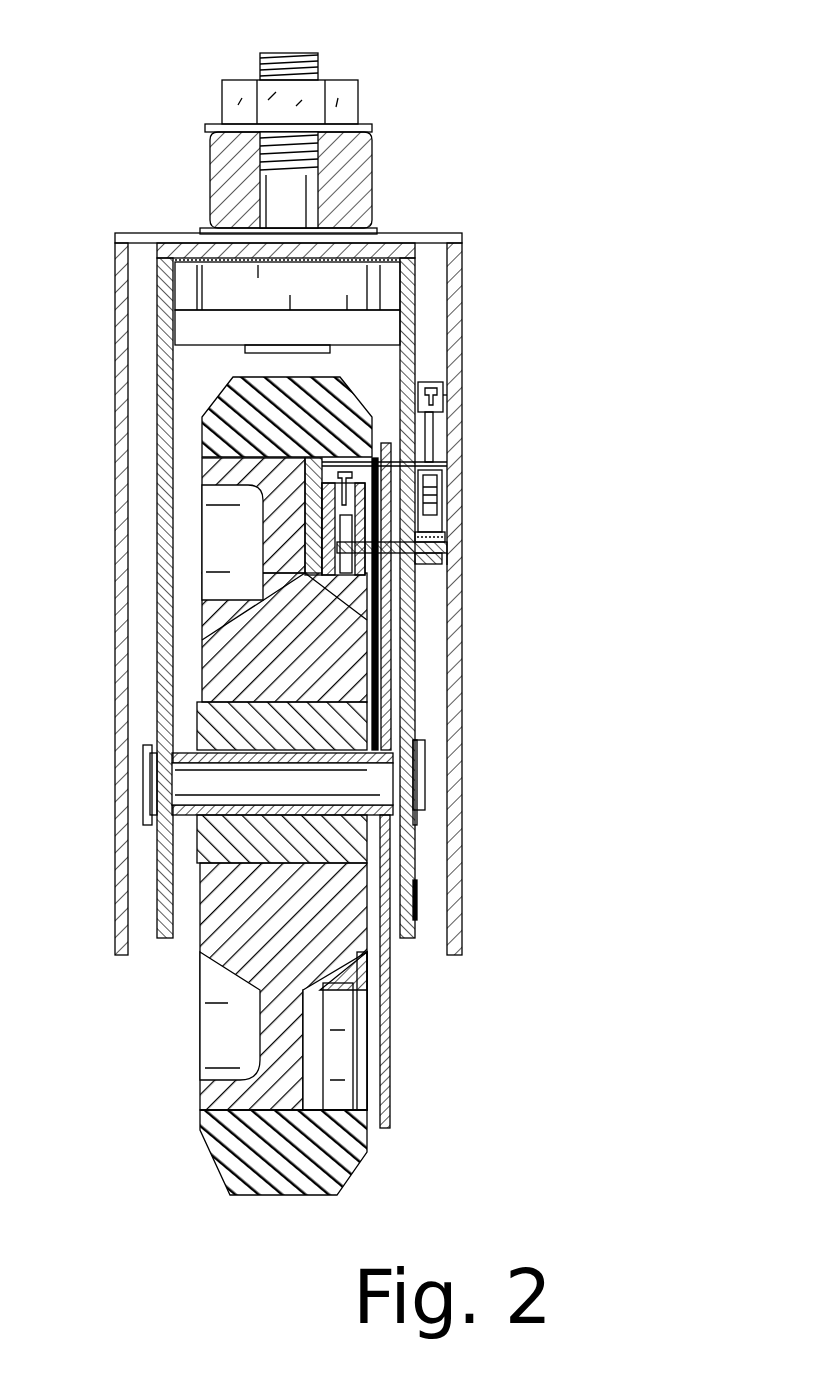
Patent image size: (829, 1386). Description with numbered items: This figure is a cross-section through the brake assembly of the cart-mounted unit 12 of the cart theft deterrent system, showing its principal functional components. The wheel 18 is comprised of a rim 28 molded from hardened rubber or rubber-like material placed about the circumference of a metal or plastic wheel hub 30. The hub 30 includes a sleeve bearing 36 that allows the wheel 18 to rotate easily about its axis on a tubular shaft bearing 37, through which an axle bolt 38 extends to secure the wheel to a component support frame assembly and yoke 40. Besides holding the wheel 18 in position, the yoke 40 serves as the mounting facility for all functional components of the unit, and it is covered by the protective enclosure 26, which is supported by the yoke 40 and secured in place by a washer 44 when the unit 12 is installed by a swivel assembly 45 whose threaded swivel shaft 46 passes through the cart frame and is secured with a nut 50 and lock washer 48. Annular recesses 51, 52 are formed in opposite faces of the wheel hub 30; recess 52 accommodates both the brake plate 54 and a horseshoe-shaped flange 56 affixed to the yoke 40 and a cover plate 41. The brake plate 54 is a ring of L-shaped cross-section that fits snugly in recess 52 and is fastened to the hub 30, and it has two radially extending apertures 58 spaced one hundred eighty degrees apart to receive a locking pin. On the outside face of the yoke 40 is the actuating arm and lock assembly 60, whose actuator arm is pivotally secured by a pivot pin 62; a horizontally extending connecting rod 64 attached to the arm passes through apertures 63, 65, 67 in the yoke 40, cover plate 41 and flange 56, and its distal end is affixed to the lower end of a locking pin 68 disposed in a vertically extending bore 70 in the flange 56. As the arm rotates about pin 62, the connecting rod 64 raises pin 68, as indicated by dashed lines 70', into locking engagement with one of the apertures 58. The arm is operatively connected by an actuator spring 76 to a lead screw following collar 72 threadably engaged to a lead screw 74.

The unit 12 is at (108, 508).
The wheel 18 is at (218, 1175).
The protective enclosure 26 is at (118, 249).
The rim 28 is at (345, 1175).
The wheel hub 30 is at (200, 1095).
The sleeve bearing 36 is at (395, 860).
The tubular shaft bearing 37 is at (415, 757).
The axle bolt 38 is at (385, 785).
The component support frame assembly and yoke 40 is at (157, 322).
The cover plate 41 is at (385, 1130).
The washer 44 is at (200, 228).
The swivel assembly 45 is at (373, 290).
The threaded swivel shaft 46 is at (310, 52).
The lock washer 48 is at (372, 128).
The nut 50 is at (222, 100).
The annular recess 51 is at (220, 1020).
The annular recess 52 is at (345, 1040).
The brake plate 54 is at (365, 1100).
The horseshoe-shaped flange 56 is at (300, 548).
The radially extending apertures 58 is at (420, 458).
The actuating arm and lock assembly 60 is at (440, 474).
The pivot pin 62 is at (430, 498).
The aperture 63 is at (447, 548).
The connecting rod 64 is at (450, 558).
The aperture 65 is at (445, 527).
The aperture 67 is at (447, 538).
The locking pin 68 is at (385, 583).
The vertically extending bore 70 is at (463, 596).
The dashed lines 70' is at (249, 542).
The lead screw following collar 72 is at (437, 382).
The lead screw 74 is at (443, 390).
The actuator spring 76 is at (430, 430).